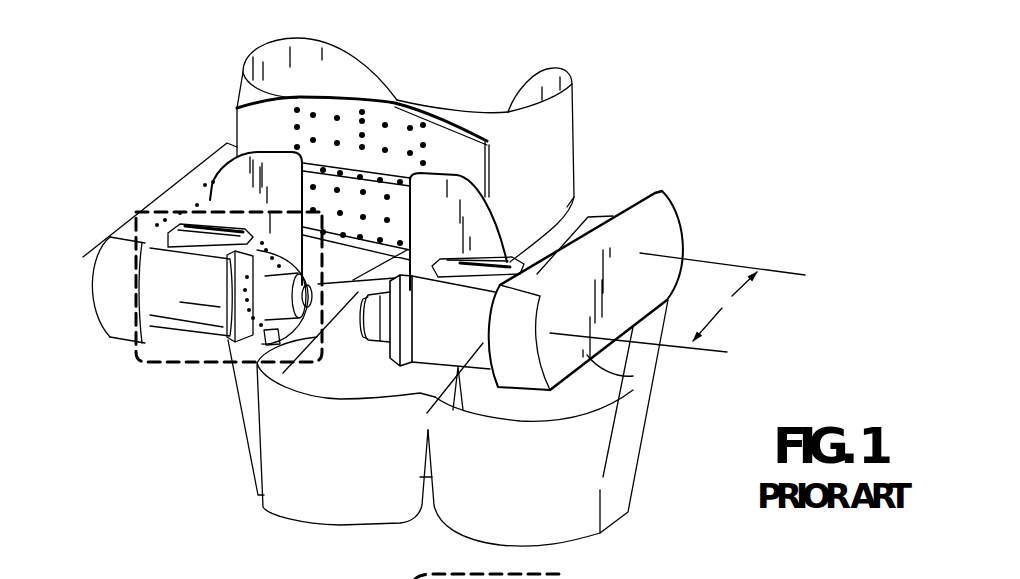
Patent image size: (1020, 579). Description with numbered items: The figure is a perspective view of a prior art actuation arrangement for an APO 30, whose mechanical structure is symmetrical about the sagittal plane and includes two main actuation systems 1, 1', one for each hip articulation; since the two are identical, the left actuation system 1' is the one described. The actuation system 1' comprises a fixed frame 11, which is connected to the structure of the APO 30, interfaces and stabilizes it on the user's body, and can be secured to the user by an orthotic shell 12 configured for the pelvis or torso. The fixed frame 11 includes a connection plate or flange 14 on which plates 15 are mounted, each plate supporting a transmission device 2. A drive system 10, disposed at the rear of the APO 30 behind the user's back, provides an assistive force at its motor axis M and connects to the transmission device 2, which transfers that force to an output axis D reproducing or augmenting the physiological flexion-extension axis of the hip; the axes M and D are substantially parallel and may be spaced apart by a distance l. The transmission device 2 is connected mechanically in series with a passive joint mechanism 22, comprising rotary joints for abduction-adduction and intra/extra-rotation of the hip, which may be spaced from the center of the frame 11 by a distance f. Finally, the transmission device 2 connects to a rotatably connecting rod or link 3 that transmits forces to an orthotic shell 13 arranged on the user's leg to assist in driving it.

The actuation system 1 is at (677, 246).
The left actuation system 1' is at (229, 334).
The transmission device 2 is at (666, 190).
The connecting rod or link 3 is at (622, 445).
The drive system 10 is at (461, 337).
The fixed frame 11 is at (400, 100).
The orthotic shell 12 is at (551, 176).
The orthotic shell 13 is at (531, 492).
The connection plate or flange 14 is at (345, 108).
The plates 15 is at (240, 187).
The passive joint mechanism 22 is at (120, 245).
The APO 30 is at (585, 124).
The output axis D is at (818, 275).
The motor axis M is at (742, 355).
The distance l is at (724, 306).
The distance f is at (435, 397).